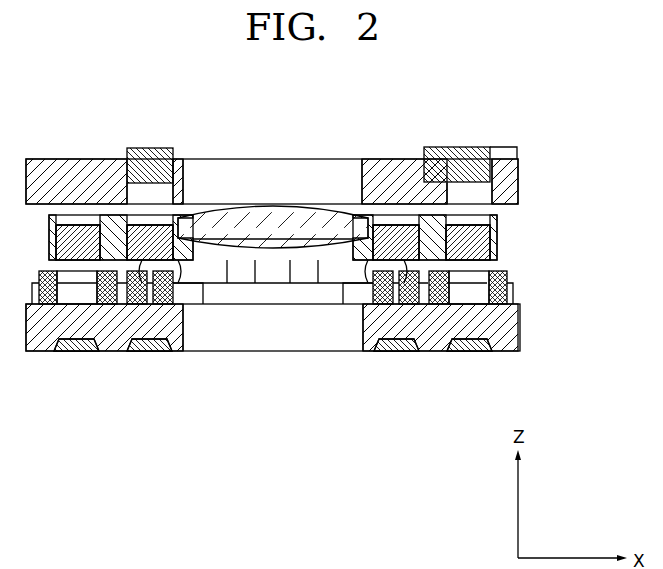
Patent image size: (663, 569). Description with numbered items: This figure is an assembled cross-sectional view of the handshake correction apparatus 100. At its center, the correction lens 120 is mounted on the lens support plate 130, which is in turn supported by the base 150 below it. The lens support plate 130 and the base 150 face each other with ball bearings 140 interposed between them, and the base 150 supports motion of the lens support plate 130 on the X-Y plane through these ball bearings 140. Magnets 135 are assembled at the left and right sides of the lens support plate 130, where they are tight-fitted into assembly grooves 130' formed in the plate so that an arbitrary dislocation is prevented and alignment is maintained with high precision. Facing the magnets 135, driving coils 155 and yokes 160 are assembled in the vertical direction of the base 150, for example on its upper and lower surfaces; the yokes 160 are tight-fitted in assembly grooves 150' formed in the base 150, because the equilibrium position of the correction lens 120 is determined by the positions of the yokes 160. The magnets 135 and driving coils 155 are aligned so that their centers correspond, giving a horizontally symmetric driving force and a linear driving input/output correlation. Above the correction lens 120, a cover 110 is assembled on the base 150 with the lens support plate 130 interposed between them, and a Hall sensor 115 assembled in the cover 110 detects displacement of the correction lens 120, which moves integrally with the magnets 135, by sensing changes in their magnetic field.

The handshake correction apparatus 100 is at (468, 131).
The cover 110 is at (512, 183).
The Hall sensor 115 is at (512, 150).
The correction lens 120 is at (273, 217).
The lens support plate 130 is at (324, 229).
The assembly grooves 130' is at (330, 240).
The magnets 135 is at (478, 255).
The ball bearings 140 is at (368, 276).
The base 150 is at (313, 327).
The assembly grooves 150' is at (273, 368).
The driving coils 155 is at (510, 291).
The yokes 160 is at (468, 342).